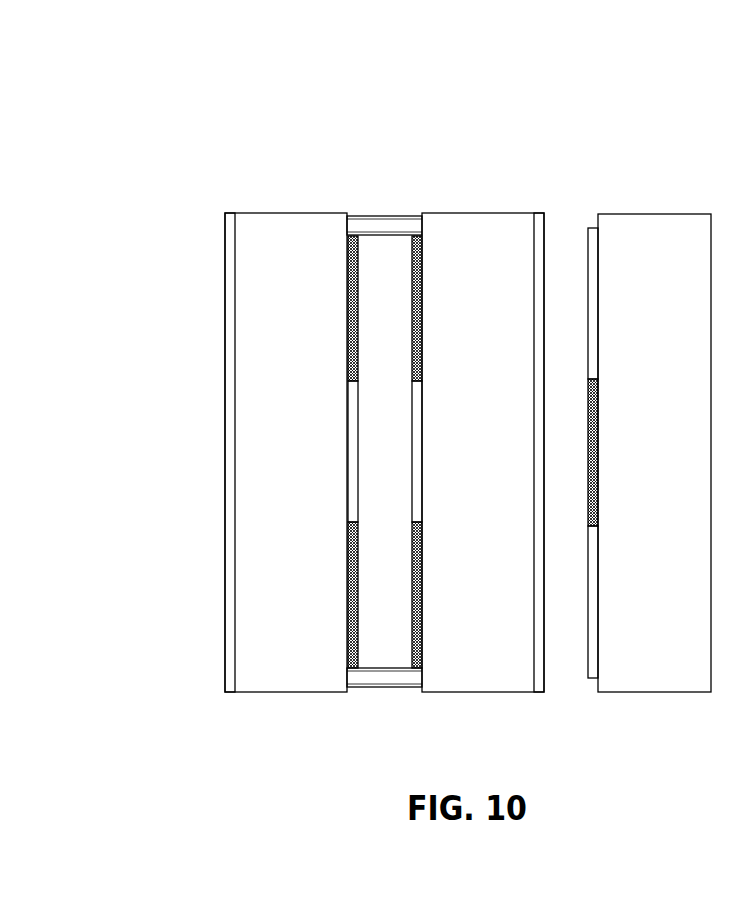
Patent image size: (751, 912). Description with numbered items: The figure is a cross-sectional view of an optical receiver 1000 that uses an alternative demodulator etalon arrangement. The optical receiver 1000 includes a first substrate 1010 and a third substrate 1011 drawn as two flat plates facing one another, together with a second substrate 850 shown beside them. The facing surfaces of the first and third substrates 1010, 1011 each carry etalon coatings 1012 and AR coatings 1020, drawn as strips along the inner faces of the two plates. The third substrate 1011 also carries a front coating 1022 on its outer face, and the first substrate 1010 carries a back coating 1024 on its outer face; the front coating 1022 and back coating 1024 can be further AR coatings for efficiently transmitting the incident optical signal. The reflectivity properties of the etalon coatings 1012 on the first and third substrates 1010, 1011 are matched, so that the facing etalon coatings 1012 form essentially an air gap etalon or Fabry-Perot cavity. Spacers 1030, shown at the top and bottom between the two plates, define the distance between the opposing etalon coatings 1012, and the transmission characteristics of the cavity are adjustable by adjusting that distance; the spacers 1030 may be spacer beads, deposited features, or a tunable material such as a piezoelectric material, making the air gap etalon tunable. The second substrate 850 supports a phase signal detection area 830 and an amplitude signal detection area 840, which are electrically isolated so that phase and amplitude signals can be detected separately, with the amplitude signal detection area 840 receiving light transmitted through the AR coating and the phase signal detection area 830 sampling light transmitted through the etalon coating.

The optical receiver 1000 is at (188, 104).
The first substrate 1010 is at (292, 213).
The third substrate 1011 is at (478, 213).
The etalon coatings 1012 is at (347, 272).
The AR coatings 1020 is at (348, 427).
The front coating 1022 is at (225, 315).
The back coating 1024 is at (545, 238).
The spacers 1030 is at (391, 215).
The second substrate 850 is at (663, 213).
The phase signal detection area 830 is at (598, 303).
The amplitude signal detection area 840 is at (598, 428).